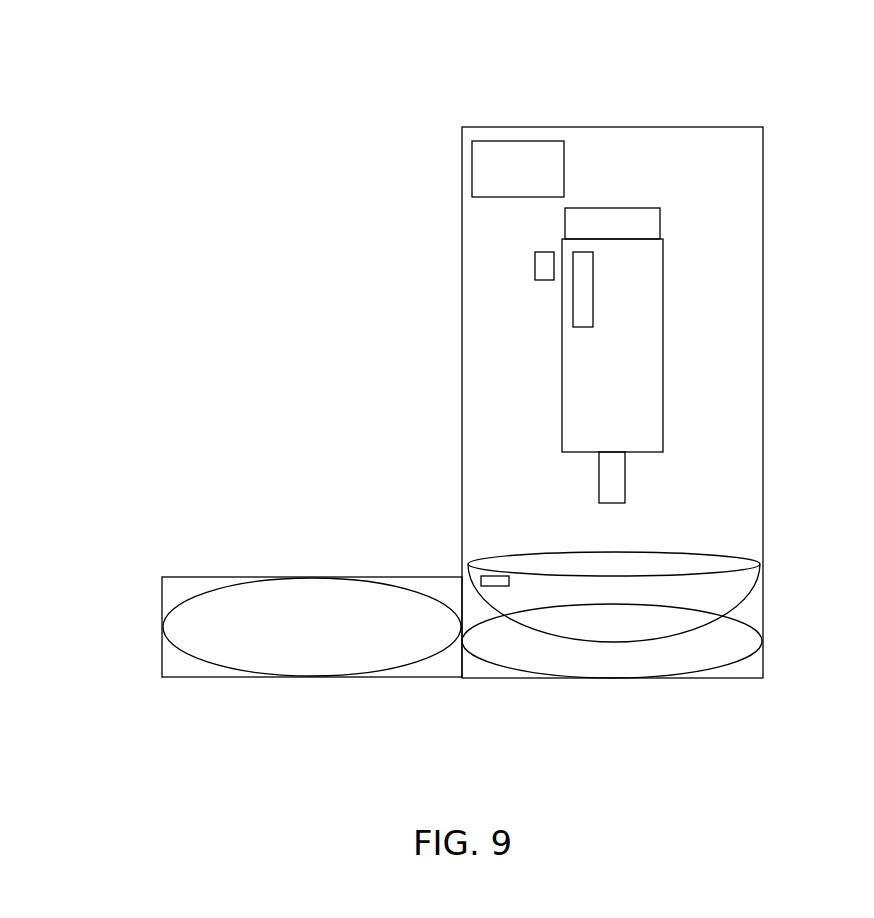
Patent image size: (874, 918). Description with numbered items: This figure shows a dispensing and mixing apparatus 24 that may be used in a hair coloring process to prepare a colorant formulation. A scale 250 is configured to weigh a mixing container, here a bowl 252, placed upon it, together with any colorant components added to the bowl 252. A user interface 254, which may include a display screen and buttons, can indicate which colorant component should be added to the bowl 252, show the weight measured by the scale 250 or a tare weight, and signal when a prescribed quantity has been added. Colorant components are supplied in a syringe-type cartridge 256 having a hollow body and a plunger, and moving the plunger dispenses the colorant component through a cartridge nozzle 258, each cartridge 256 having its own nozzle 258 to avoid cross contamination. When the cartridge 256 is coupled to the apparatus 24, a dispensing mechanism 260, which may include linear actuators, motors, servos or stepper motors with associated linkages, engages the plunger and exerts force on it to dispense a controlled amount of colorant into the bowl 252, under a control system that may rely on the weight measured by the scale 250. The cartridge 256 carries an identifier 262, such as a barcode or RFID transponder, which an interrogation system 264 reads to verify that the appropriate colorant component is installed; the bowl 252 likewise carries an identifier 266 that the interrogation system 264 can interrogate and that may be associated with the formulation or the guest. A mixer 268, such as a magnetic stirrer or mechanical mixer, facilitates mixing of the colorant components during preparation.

The dispensing and mixing apparatus 24 is at (50, 40).
The scale 250 is at (740, 623).
The bowl 252 is at (492, 555).
The user interface 254 is at (470, 168).
The cartridge 256 is at (666, 344).
The cartridge nozzle 258 is at (628, 473).
The dispensing mechanism 260 is at (656, 225).
The identifier 262 is at (572, 297).
The interrogation system 264 is at (535, 265).
The identifier 266 is at (495, 580).
The mixer 268 is at (183, 641).